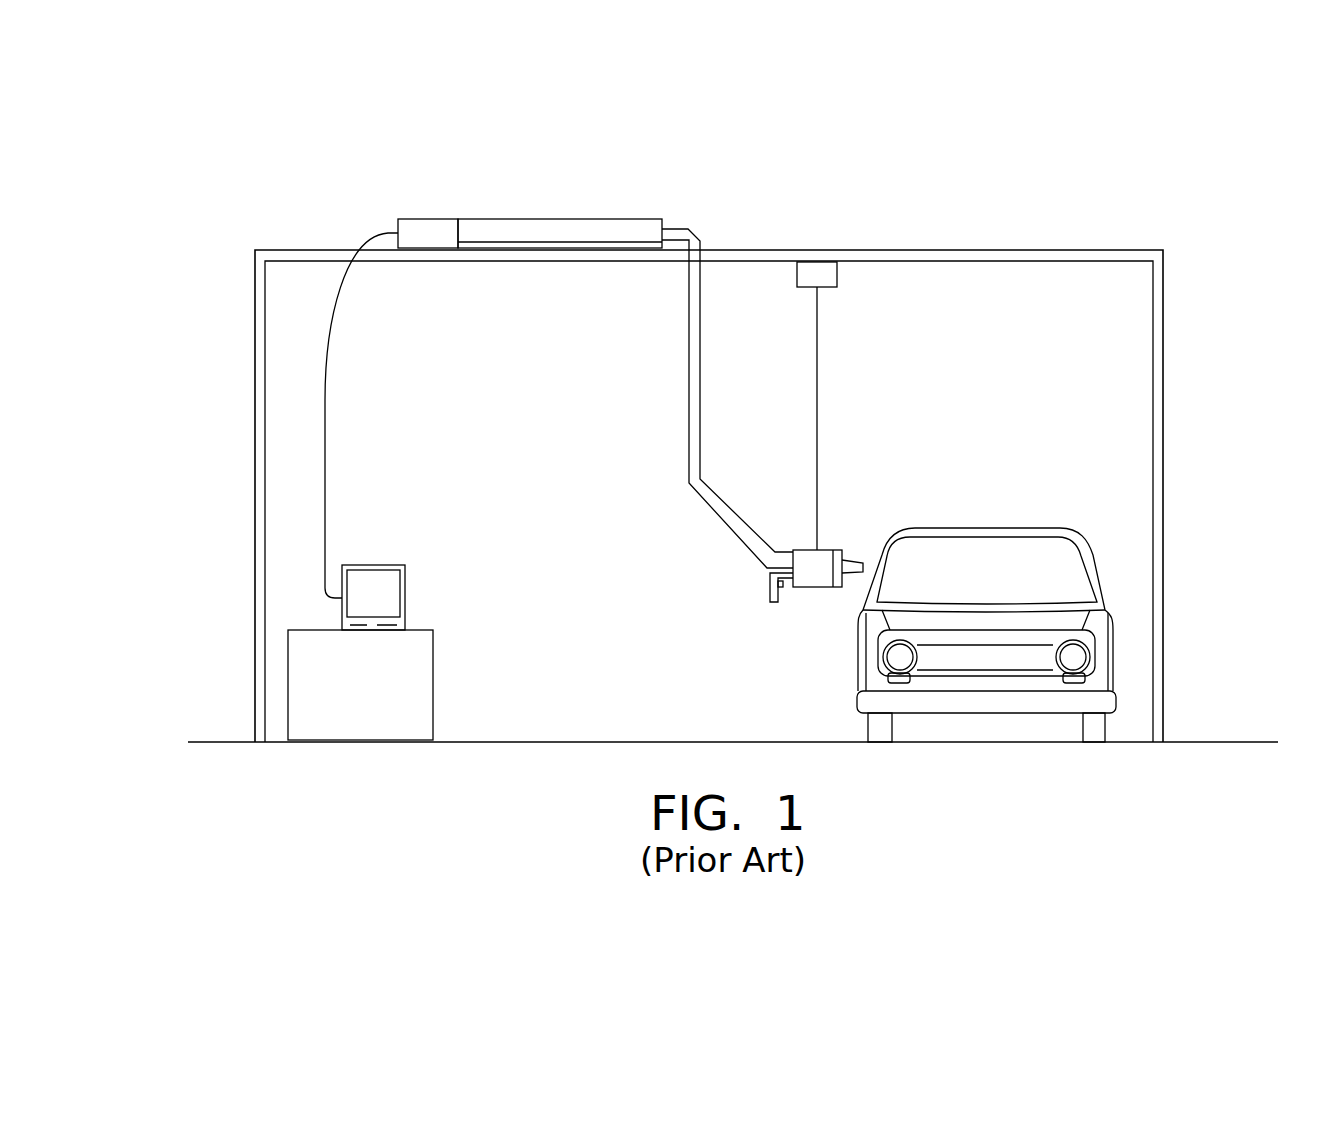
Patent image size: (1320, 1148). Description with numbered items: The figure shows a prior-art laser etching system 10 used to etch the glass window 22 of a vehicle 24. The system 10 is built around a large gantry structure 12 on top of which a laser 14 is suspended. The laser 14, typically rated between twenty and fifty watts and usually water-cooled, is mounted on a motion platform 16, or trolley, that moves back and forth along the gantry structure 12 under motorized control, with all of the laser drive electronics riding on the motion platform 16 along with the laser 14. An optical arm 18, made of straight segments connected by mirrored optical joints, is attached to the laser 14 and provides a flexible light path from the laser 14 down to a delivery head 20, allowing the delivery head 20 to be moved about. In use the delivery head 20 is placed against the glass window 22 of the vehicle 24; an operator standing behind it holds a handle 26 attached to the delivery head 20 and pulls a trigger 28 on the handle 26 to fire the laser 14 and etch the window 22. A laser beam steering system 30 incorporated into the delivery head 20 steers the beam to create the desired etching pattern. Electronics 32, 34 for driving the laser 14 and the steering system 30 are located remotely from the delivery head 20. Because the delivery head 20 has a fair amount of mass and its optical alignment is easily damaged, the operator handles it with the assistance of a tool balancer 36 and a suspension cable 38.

The laser etching system 10 is at (200, 194).
The gantry structure 12 is at (256, 404).
The laser 14 is at (482, 226).
The motion platform 16 is at (547, 246).
The optical arm 18 is at (695, 302).
The delivery head 20 is at (820, 549).
The glass window 22 is at (865, 567).
The vehicle 24 is at (987, 527).
The handle 26 is at (770, 597).
The trigger 28 is at (786, 590).
The laser beam steering system 30 is at (837, 588).
The electronics 32 is at (417, 668).
The electronics 34 is at (416, 223).
The tool balancer 36 is at (830, 274).
The suspension cable 38 is at (818, 418).